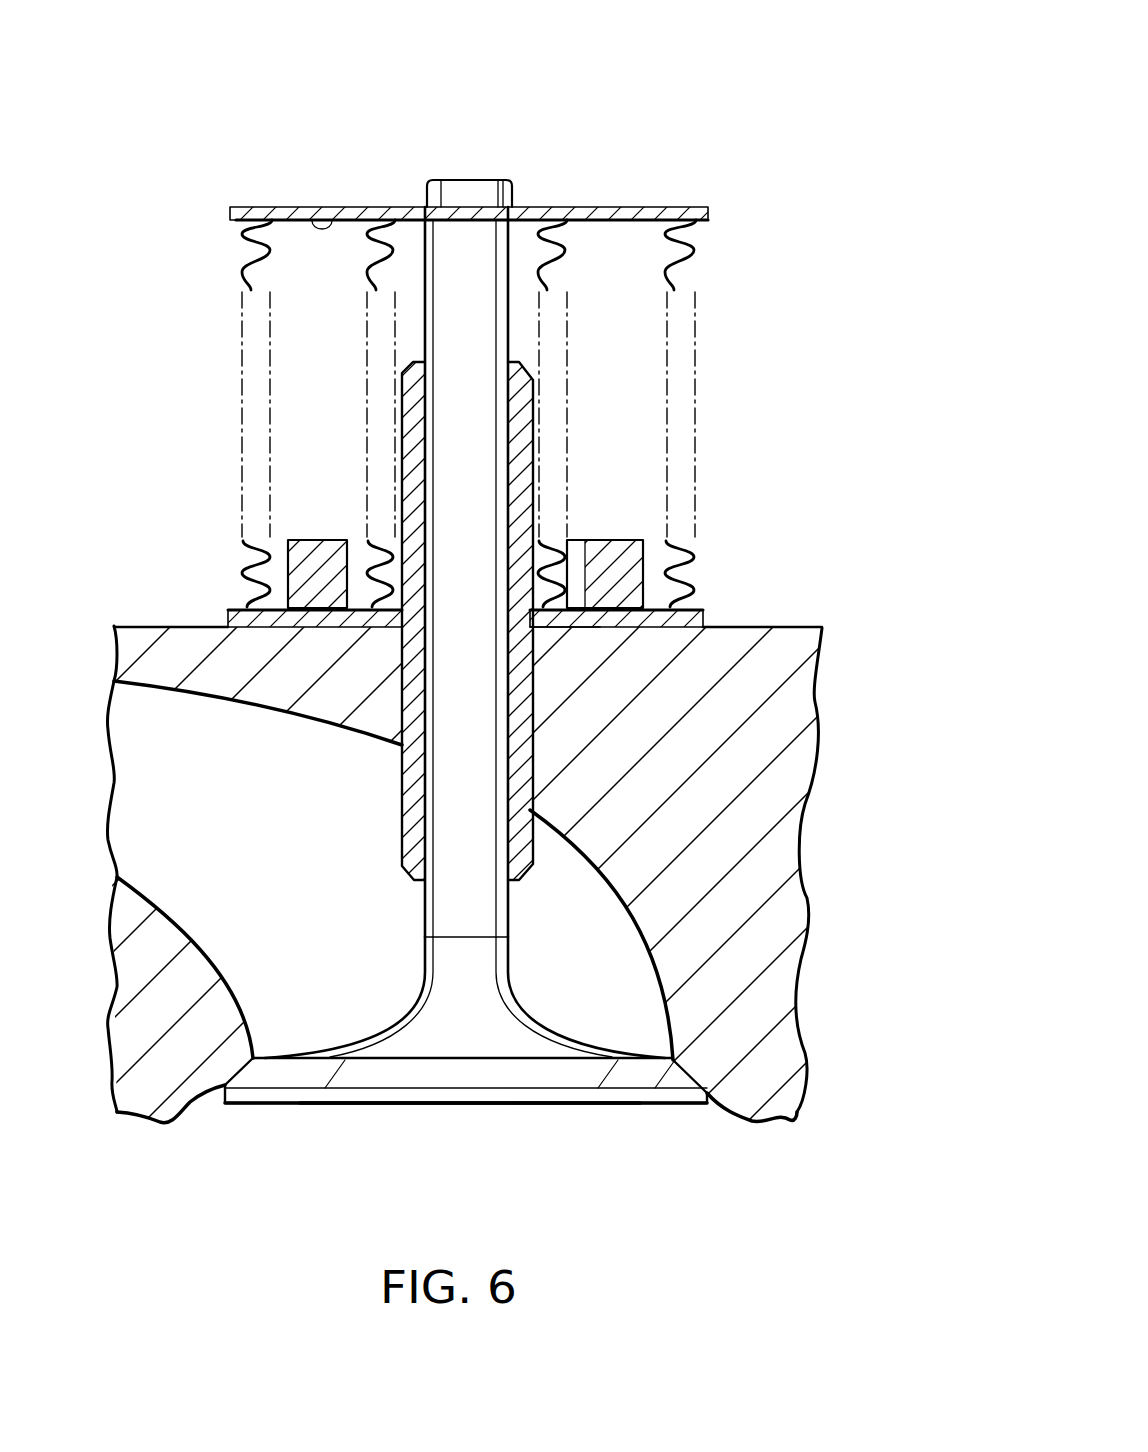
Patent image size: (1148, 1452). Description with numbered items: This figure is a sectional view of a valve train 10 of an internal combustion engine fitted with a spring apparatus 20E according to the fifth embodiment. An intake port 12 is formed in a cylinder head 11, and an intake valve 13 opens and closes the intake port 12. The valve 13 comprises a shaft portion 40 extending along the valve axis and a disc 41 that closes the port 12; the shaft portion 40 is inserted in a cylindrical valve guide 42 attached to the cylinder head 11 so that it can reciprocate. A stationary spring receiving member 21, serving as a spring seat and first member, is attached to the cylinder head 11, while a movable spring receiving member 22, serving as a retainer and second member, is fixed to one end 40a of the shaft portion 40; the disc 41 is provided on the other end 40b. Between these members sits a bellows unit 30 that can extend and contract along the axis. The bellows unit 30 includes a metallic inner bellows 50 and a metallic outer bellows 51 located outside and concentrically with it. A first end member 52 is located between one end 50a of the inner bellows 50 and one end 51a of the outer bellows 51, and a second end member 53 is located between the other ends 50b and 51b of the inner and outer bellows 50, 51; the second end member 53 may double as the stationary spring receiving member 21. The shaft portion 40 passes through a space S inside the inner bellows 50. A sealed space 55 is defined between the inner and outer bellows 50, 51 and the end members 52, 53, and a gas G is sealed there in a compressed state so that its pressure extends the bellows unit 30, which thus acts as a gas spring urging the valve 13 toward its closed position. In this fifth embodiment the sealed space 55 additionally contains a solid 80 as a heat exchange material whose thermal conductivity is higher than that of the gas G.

The valve train 10 is at (766, 90).
The cylinder head 11 is at (782, 858).
The intake port 12 is at (635, 997).
The intake valve 13 is at (500, 1046).
The spring apparatus 20E is at (745, 390).
The stationary spring receiving member 21 is at (268, 630).
The movable spring receiving member 22 is at (272, 205).
The bellows unit 30 is at (449, 368).
The shaft portion 40 is at (452, 836).
The one end of the shaft portion 40a is at (467, 200).
The other end of the shaft portion 40b is at (422, 915).
The disc 41 is at (405, 1106).
The valve guide 42 is at (402, 722).
The inner bellows 50 is at (473, 368).
The one end of the inner bellows 50a is at (547, 215).
The other end of the inner bellows 50b is at (552, 628).
The outer bellows 51 is at (511, 368).
The one end of the outer bellows 51a is at (687, 203).
The other end of the outer bellows 51b is at (688, 628).
The first end member 52 is at (323, 218).
The second end member 53 is at (313, 600).
The sealed space 55 is at (305, 384).
The solid 80 is at (630, 540).
The gas G is at (630, 438).
The space inside the inner bellows S is at (394, 252).